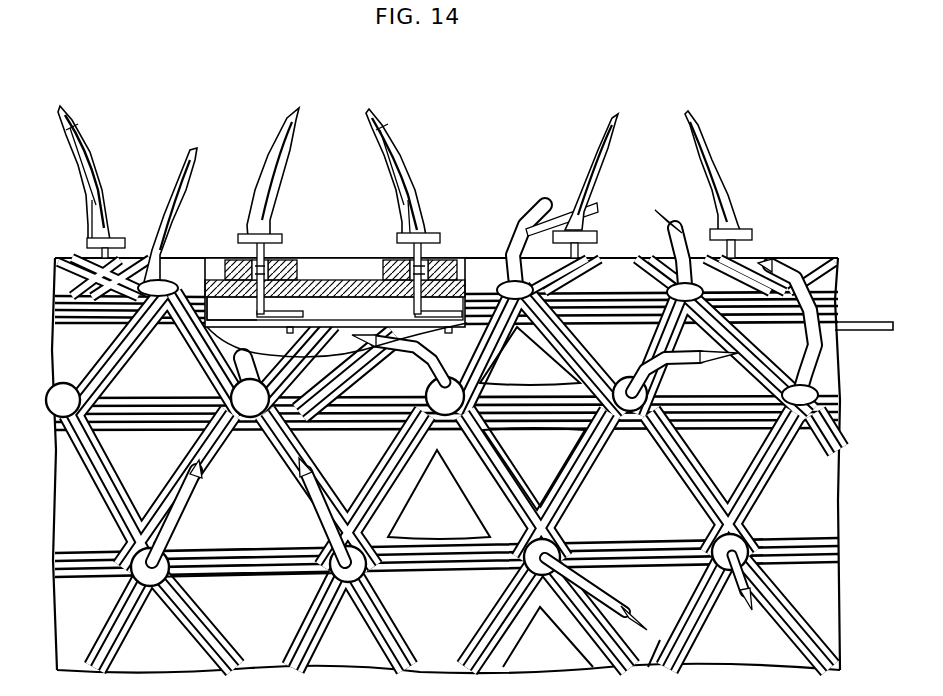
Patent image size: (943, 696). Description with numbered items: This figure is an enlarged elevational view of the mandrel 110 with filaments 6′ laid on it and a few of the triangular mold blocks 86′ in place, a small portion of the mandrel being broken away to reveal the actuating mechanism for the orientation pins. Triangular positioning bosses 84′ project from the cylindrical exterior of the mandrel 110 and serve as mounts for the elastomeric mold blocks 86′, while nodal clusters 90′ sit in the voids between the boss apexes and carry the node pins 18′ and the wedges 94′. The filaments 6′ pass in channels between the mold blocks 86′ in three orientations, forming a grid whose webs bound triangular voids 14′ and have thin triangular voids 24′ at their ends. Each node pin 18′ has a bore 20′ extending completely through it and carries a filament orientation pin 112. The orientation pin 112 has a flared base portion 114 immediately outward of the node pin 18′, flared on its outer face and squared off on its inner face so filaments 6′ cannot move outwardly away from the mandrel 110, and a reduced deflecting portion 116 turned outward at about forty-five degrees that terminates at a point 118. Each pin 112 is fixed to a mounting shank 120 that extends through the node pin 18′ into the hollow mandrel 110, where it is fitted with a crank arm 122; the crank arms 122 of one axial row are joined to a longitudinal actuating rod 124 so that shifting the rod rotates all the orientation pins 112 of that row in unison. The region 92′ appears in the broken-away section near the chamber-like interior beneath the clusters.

The filaments 6′ is at (118, 372).
The triangular voids 14′ is at (150, 465).
The node pins 18′ is at (440, 262).
The bores 20′ is at (412, 292).
The thin triangular voids 24′ is at (270, 455).
The triangular positioning bosses 84′ is at (548, 460).
The elastomeric mold blocks 86′ is at (565, 493).
The nodal clusters 90′ is at (290, 262).
The chamber 92′ is at (245, 297).
The wedges 94′ is at (223, 262).
The mandrel 110 is at (325, 285).
The filament orientation pin 112 is at (100, 133).
The flared base portion 114 is at (90, 222).
The deflecting portion 116 is at (80, 152).
The point 118 is at (60, 106).
The mounting shank 120 is at (233, 262).
The crank arm 122 is at (300, 316).
The actuating rod 124 is at (243, 322).